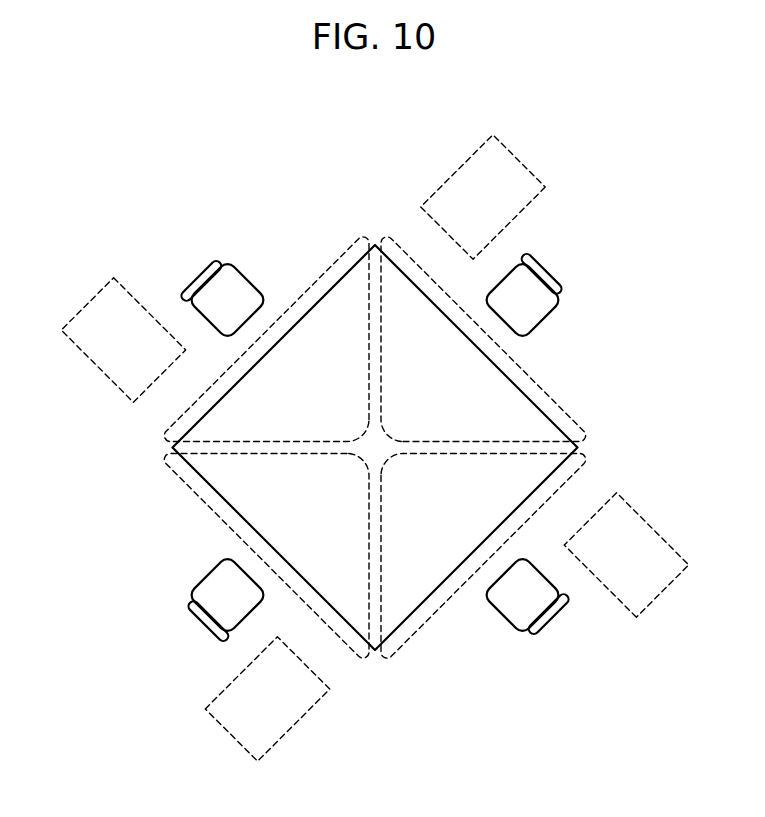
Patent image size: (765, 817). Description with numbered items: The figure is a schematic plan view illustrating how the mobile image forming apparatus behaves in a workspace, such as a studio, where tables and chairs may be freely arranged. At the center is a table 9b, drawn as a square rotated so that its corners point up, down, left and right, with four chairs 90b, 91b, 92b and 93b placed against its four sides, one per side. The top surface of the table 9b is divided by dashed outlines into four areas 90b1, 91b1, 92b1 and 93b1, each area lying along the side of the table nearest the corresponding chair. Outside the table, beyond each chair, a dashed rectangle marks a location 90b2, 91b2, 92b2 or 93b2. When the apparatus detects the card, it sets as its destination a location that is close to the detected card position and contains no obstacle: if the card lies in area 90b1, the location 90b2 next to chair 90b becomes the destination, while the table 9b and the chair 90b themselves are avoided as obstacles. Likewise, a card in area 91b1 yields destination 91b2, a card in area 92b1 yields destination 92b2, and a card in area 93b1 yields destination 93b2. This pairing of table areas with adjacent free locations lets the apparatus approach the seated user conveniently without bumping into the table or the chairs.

The table 9b is at (353, 266).
The chair 90b is at (554, 617).
The chair 91b is at (201, 624).
The chair 92b is at (199, 279).
The chair 93b is at (550, 273).
The area 90b1 is at (440, 610).
The area 91b1 is at (210, 508).
The area 92b1 is at (310, 288).
The area 93b1 is at (537, 383).
The location 90b2 is at (665, 589).
The location 91b2 is at (228, 732).
The location 92b2 is at (88, 303).
The location 93b2 is at (526, 168).